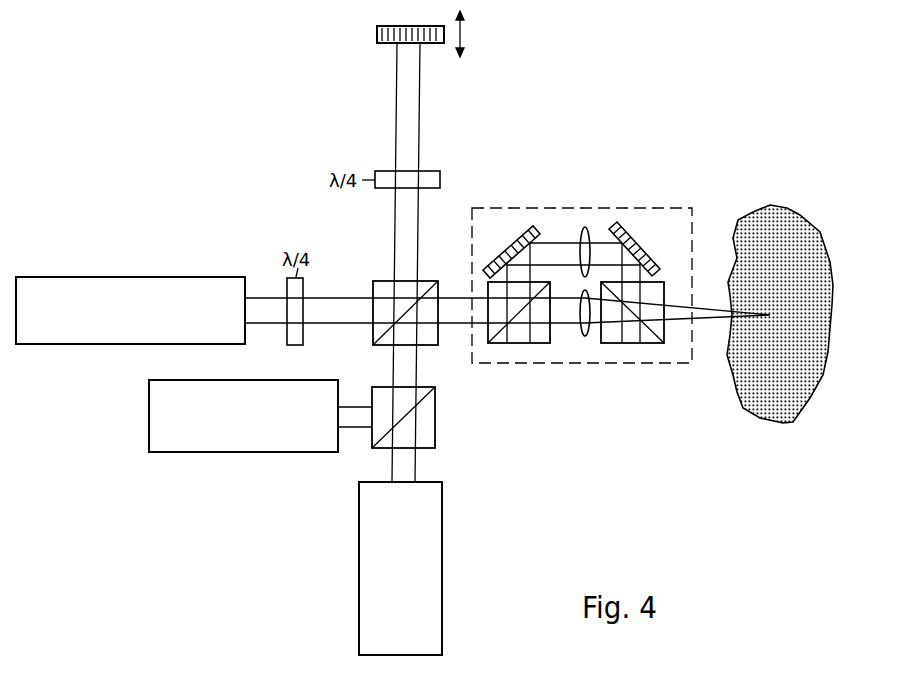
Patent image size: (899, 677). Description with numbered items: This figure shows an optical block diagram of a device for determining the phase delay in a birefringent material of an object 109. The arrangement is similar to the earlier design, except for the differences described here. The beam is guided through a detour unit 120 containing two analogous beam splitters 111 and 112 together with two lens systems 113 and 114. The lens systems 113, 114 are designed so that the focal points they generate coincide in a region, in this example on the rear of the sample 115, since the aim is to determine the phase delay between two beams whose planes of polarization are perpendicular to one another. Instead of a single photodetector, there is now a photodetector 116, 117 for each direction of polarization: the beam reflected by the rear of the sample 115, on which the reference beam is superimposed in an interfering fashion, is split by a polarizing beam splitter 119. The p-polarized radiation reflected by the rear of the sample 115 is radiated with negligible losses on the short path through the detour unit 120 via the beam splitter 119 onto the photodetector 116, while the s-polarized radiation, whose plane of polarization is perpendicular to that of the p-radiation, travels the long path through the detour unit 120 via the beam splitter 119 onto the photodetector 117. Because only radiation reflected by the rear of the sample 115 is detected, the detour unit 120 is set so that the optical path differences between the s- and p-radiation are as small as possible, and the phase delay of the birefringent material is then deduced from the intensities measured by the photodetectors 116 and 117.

The object 109 is at (750, 383).
The beam splitter 111 is at (525, 340).
The beam splitter 112 is at (640, 340).
The lens system 113 is at (585, 335).
The lens system 114 is at (583, 234).
The rear of the sample 115 is at (770, 315).
The photodetector 116 is at (414, 520).
The photodetector 117 is at (259, 430).
The polarizing beam splitter 119 is at (444, 428).
The detour unit 120 is at (641, 209).